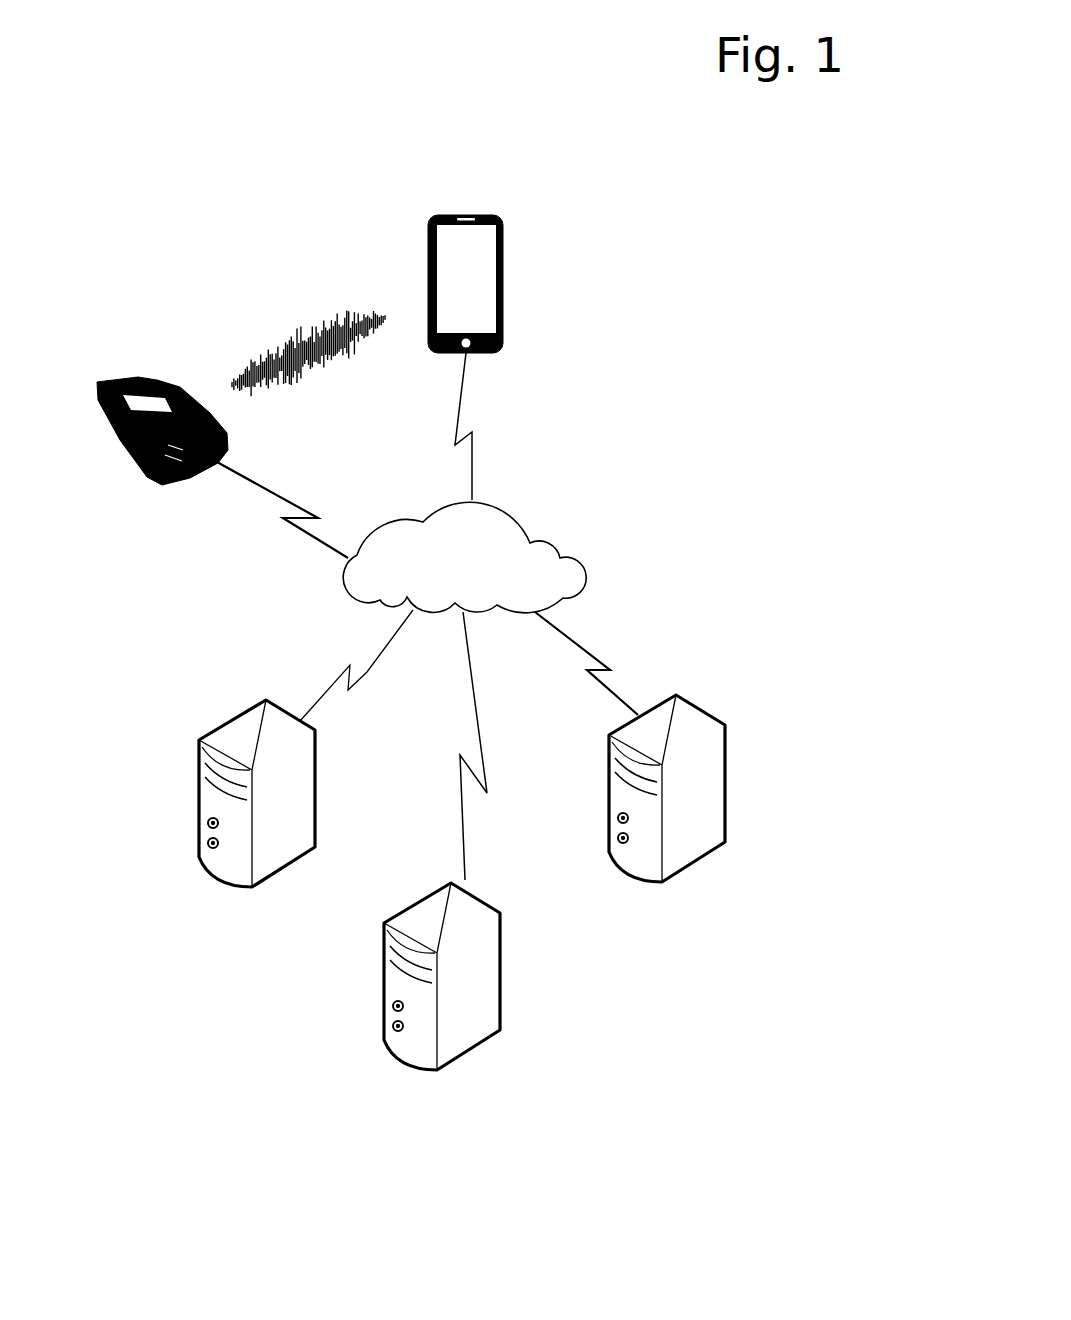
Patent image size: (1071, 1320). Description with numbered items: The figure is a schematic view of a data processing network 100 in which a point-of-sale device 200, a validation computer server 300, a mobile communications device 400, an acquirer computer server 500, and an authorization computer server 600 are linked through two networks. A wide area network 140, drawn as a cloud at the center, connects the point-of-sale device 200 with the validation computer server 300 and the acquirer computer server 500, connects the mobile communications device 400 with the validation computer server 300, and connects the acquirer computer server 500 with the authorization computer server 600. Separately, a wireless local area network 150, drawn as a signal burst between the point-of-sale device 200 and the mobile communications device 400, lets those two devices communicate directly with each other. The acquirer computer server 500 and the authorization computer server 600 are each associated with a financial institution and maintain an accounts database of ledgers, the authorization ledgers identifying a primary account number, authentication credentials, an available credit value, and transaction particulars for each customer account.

The data processing network 100 is at (729, 1200).
The wide area network 140 is at (515, 517).
The wireless local area network 150 is at (293, 300).
The point-of-sale device 200 is at (118, 378).
The validation computer server 300 is at (227, 718).
The mobile communications device 400 is at (460, 215).
The acquirer computer server 500 is at (712, 710).
The authorization computer server 600 is at (398, 1055).